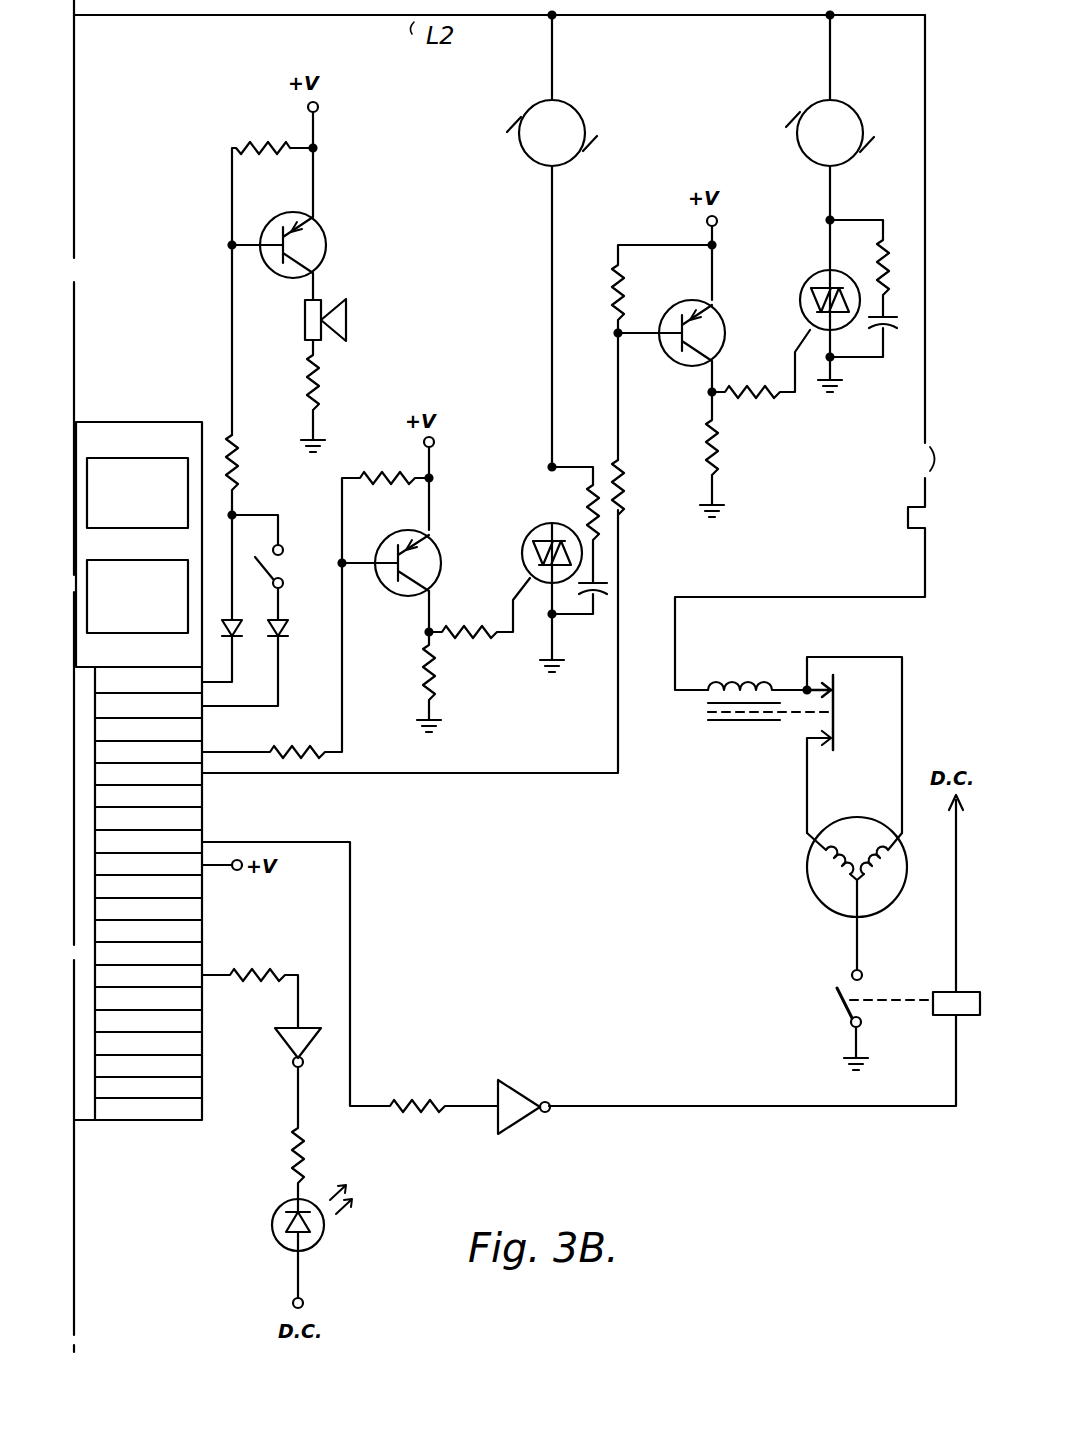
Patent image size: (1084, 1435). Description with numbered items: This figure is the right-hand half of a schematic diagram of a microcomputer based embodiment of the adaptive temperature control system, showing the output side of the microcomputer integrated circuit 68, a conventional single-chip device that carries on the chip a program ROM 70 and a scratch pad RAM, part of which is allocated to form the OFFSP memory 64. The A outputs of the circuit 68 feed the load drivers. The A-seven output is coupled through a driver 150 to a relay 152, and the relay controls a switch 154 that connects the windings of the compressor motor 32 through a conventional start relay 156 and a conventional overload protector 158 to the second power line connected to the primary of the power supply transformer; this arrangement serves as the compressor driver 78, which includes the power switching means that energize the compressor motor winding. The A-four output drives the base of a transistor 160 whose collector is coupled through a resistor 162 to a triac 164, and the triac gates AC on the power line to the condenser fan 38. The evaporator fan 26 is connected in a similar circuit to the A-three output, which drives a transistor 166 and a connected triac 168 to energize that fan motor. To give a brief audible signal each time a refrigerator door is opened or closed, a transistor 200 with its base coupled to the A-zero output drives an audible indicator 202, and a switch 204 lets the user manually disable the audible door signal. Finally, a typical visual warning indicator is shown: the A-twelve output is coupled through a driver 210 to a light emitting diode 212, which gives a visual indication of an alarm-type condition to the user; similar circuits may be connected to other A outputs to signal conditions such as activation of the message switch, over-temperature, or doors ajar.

The evaporator fan 26 is at (475, 165).
The condenser fan 38 is at (750, 160).
The compressor motor 32 is at (758, 956).
The microcomputer integrated circuit 68 is at (145, 421).
The OFFSP memory 64 is at (154, 456).
The program ROM 70 is at (164, 559).
The compressor driver 78 is at (915, 1015).
The driver 150 is at (522, 1095).
The relay 152 is at (946, 1017).
The switch 154 is at (834, 1012).
The start relay 156 is at (772, 776).
The overload protector 158 is at (898, 490).
The transistor 160 is at (685, 368).
The resistor 162 is at (758, 403).
The triac 164 is at (812, 280).
The transistor 166 is at (400, 598).
The triac 168 is at (530, 538).
The transistor 200 is at (327, 245).
The audible indicator 202 is at (349, 320).
The switch 204 is at (290, 559).
The driver 210 is at (290, 1068).
The light emitting diode 212 is at (276, 1228).